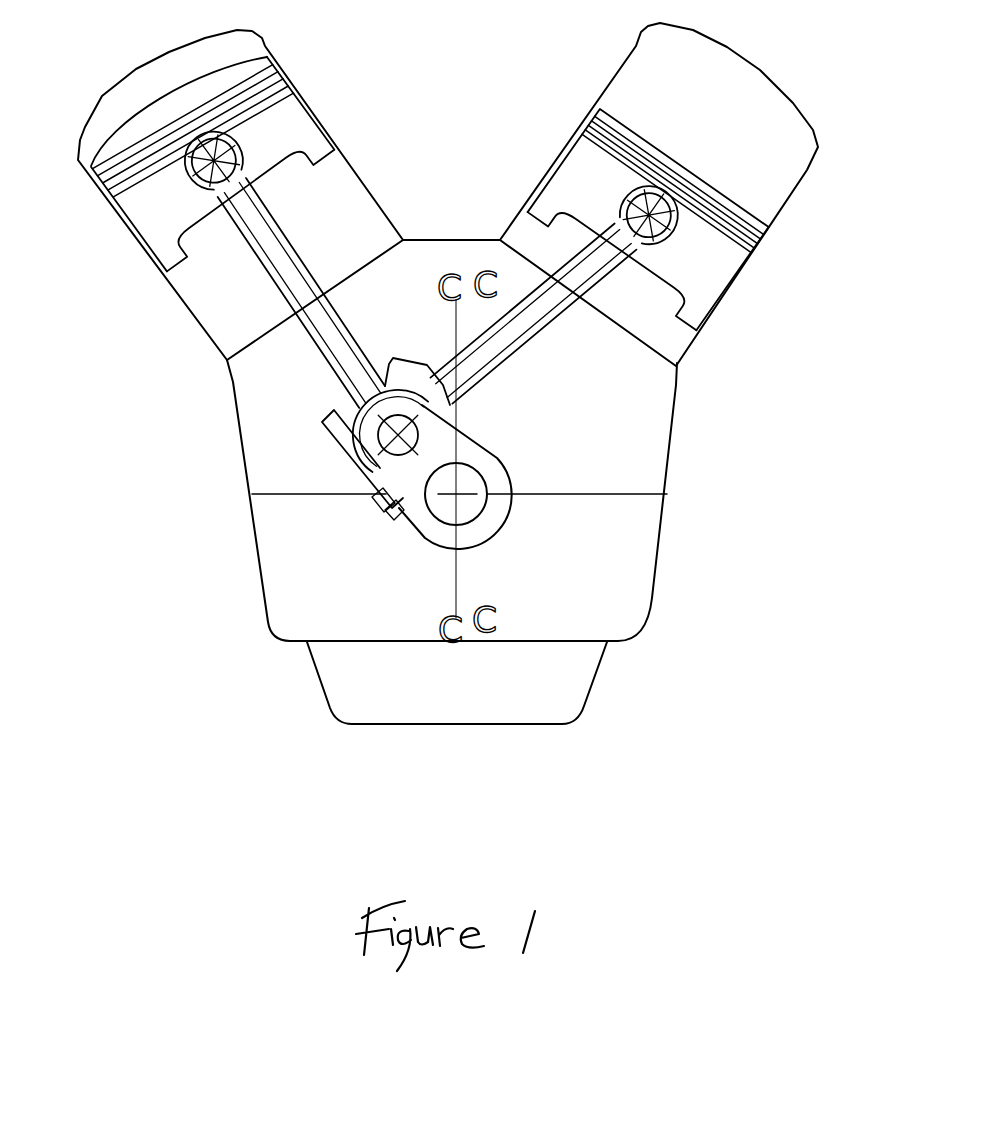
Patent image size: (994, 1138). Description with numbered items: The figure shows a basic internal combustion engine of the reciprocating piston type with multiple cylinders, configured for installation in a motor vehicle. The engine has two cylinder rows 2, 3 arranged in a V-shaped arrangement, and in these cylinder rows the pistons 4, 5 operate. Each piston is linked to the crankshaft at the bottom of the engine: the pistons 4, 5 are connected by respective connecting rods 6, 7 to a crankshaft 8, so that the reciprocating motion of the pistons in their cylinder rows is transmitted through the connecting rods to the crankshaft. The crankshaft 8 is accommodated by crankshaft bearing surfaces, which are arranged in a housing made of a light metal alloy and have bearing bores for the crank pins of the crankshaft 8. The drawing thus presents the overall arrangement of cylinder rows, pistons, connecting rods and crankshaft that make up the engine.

The cylinder row 2 is at (800, 183).
The cylinder row 3 is at (108, 205).
The piston 4 is at (283, 127).
The piston 5 is at (573, 173).
The connecting rod 6 is at (320, 363).
The connecting rod 7 is at (553, 335).
The crankshaft 8 is at (500, 467).